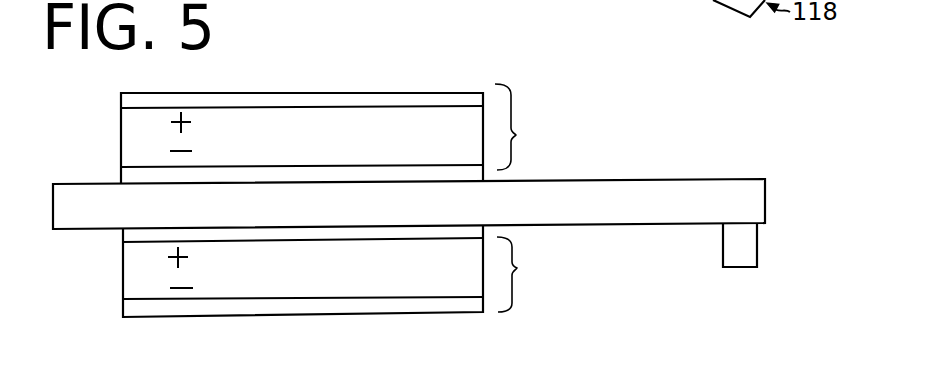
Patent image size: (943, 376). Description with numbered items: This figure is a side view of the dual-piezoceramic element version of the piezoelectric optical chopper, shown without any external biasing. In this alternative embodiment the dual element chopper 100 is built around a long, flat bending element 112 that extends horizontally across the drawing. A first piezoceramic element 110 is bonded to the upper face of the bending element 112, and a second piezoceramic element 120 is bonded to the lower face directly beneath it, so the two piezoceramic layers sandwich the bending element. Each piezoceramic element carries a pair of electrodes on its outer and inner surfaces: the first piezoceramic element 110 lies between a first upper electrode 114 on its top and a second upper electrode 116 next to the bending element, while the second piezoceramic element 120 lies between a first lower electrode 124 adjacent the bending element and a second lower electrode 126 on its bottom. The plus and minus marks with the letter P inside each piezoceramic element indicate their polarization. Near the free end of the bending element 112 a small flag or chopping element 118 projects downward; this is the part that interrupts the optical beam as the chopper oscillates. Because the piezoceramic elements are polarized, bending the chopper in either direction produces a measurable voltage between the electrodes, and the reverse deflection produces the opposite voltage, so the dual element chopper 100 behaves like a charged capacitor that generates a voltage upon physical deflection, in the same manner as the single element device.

The dual element chopper 100 is at (343, 54).
The first piezoceramic element 110 is at (362, 113).
The bending element 112 is at (822, 186).
The first upper electrode 114 is at (507, 46).
The second upper electrode 116 is at (492, 169).
The flag or chopping element 118 is at (849, 233).
The second piezoceramic element 120 is at (361, 276).
The first lower electrode 124 is at (492, 241).
The second lower electrode 126 is at (492, 301).